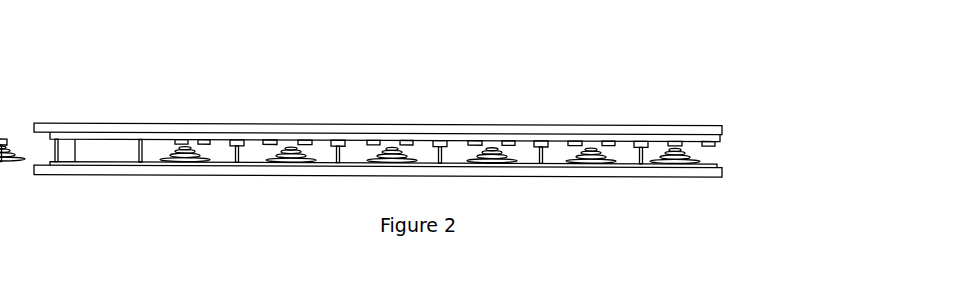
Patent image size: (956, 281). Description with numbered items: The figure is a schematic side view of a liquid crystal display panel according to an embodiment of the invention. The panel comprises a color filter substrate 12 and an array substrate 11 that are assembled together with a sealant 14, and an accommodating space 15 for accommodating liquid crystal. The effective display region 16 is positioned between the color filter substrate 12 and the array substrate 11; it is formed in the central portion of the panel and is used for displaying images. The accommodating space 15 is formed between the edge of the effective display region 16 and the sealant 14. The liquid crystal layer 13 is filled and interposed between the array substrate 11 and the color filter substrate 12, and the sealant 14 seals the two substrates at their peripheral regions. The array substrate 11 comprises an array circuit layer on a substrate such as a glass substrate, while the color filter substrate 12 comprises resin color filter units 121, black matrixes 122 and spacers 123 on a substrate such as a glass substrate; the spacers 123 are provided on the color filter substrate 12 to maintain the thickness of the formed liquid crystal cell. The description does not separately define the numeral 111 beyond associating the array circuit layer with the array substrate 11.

The array substrate 11 is at (378, 96).
The lower electrode layer 111 is at (386, 92).
The color filter substrate 12 is at (378, 75).
The resin color filter units 121 is at (524, 144).
The black matrixes 122 is at (632, 81).
The spacers 123 is at (324, 90).
The liquid crystal layer 13 is at (350, 90).
The sealant 14 is at (79, 89).
The accommodating space 15 is at (385, 83).
The effective display region 16 is at (178, 112).